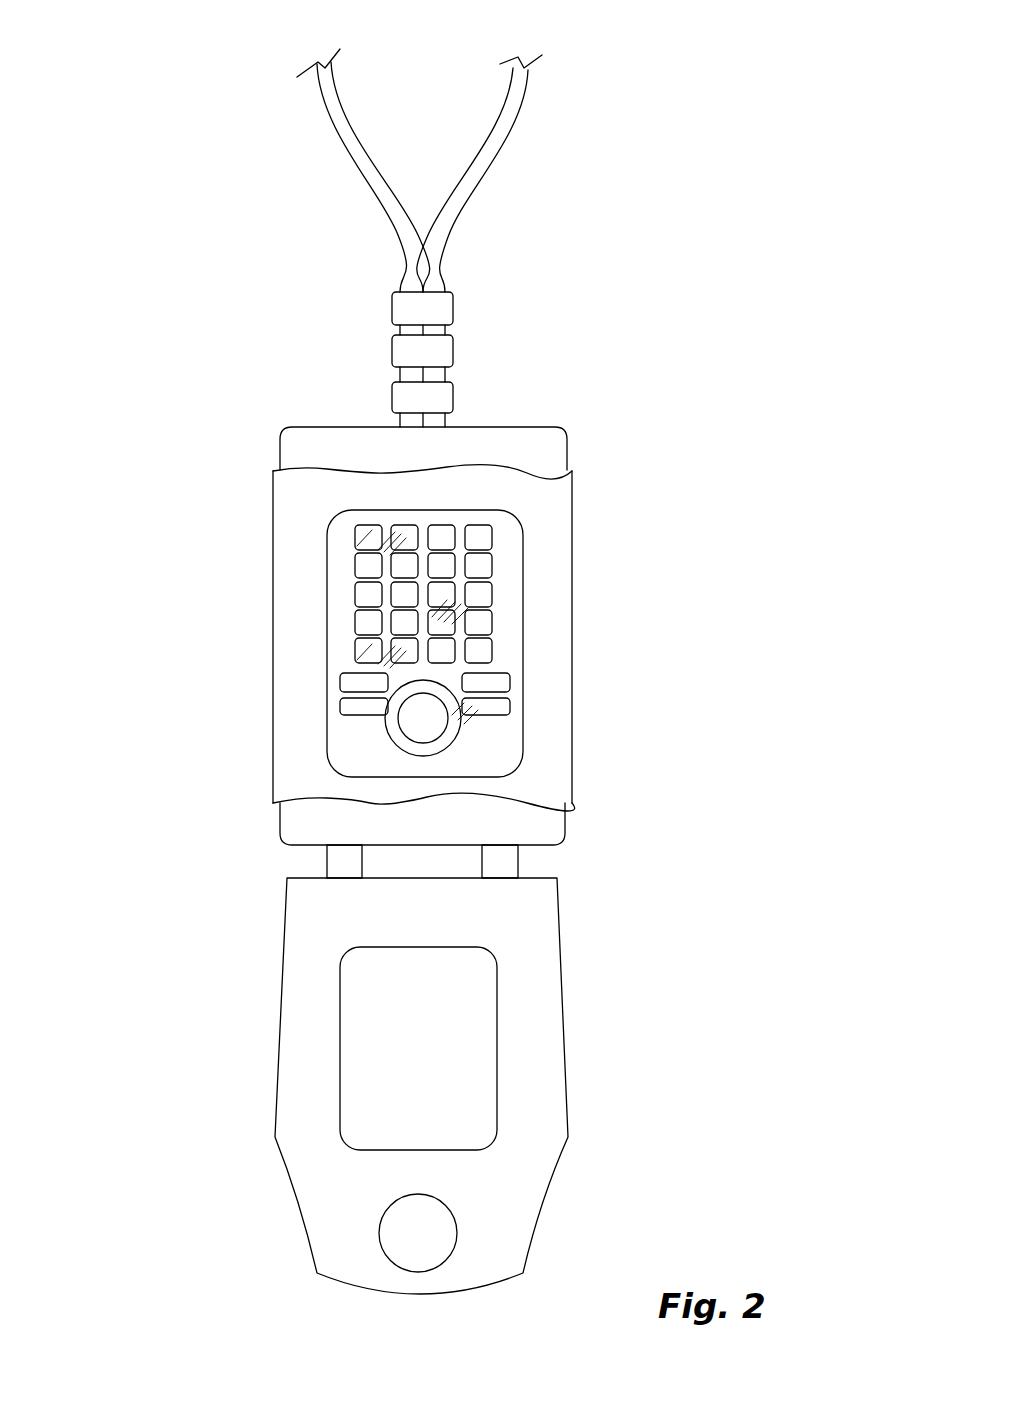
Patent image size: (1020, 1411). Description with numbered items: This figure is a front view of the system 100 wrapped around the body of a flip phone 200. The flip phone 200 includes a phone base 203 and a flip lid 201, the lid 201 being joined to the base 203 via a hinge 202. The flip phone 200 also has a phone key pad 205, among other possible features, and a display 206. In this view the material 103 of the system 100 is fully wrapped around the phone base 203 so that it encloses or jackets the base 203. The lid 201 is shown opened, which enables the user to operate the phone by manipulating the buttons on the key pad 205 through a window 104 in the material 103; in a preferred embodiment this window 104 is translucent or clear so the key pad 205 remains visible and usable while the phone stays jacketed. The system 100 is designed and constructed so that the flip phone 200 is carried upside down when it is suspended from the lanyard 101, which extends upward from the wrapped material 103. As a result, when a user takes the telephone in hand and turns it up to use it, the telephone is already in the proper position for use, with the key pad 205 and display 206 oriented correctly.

The system 100 is at (439, 606).
The lanyard 101 is at (340, 152).
The material 103 is at (558, 547).
The window 104 is at (343, 659).
The flip phone 200 is at (416, 1022).
The flip lid 201 is at (290, 978).
The hinge 202 is at (513, 867).
The phone base 203 is at (280, 452).
The phone key pad 205 is at (525, 688).
The display 206 is at (473, 1012).